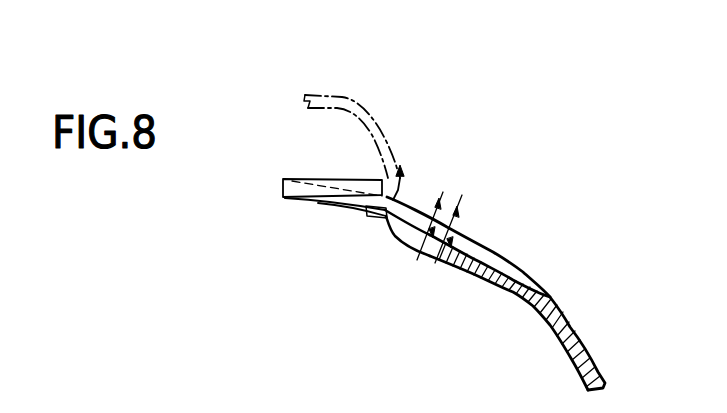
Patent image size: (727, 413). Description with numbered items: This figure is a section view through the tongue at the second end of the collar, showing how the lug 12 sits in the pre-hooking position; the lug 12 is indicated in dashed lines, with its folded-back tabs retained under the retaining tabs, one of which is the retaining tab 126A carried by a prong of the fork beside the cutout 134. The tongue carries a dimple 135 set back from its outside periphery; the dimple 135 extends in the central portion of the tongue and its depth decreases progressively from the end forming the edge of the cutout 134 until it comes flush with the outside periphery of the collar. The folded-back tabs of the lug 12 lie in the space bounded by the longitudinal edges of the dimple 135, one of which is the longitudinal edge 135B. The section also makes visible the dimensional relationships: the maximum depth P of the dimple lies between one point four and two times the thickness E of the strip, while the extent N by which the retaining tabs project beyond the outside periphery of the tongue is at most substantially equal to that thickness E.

The lug 12 is at (352, 98).
The retaining tab 126A is at (283, 188).
The cutout 134 is at (398, 246).
The dimple 135 is at (496, 252).
The longitudinal edge of the dimple 135B is at (518, 277).
The extent by which the retaining tabs project N is at (400, 190).
The maximum depth of the dimple P is at (443, 192).
The thickness of the strip E is at (463, 210).